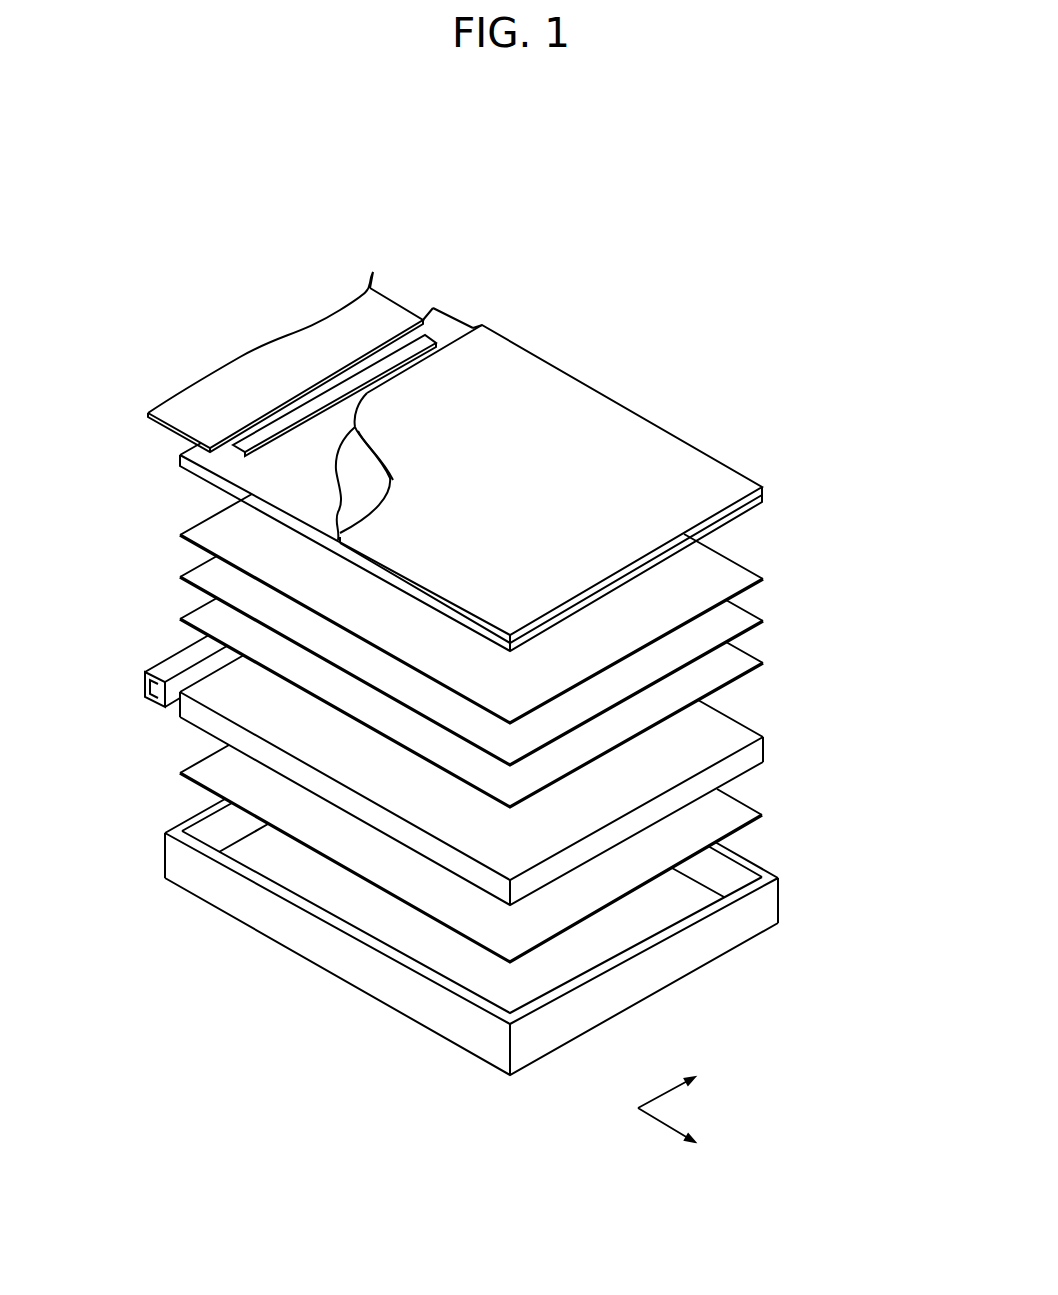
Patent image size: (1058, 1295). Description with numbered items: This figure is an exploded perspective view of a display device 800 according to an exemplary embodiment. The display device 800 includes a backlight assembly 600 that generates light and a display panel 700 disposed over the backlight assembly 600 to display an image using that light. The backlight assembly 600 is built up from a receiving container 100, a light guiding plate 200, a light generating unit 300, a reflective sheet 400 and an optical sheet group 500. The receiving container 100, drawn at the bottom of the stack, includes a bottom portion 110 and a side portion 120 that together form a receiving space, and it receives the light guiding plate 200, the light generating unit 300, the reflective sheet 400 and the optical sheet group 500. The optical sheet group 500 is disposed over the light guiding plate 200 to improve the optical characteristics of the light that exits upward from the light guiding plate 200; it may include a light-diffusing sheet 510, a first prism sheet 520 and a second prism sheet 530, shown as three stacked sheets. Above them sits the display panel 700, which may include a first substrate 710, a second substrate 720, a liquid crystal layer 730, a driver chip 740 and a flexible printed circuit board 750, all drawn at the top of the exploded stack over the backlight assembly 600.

The display device 800 is at (402, 168).
The display panel 700 is at (682, 236).
The first substrate 710 is at (437, 318).
The second substrate 720 is at (523, 372).
The liquid crystal layer 730 is at (362, 490).
The driver chip 740 is at (457, 318).
The flexible printed circuit board 750 is at (383, 308).
The backlight assembly 600 is at (862, 558).
The optical sheet group 500 is at (816, 558).
The second prism sheet 530 is at (741, 578).
The first prism sheet 520 is at (741, 618).
The light-diffusing sheet 510 is at (741, 661).
The light guiding plate 200 is at (741, 733).
The light generating unit 300 is at (155, 654).
The reflective sheet 400 is at (741, 814).
The receiving container 100 is at (188, 943).
The side portion 120 is at (267, 912).
The bottom portion 110 is at (347, 913).